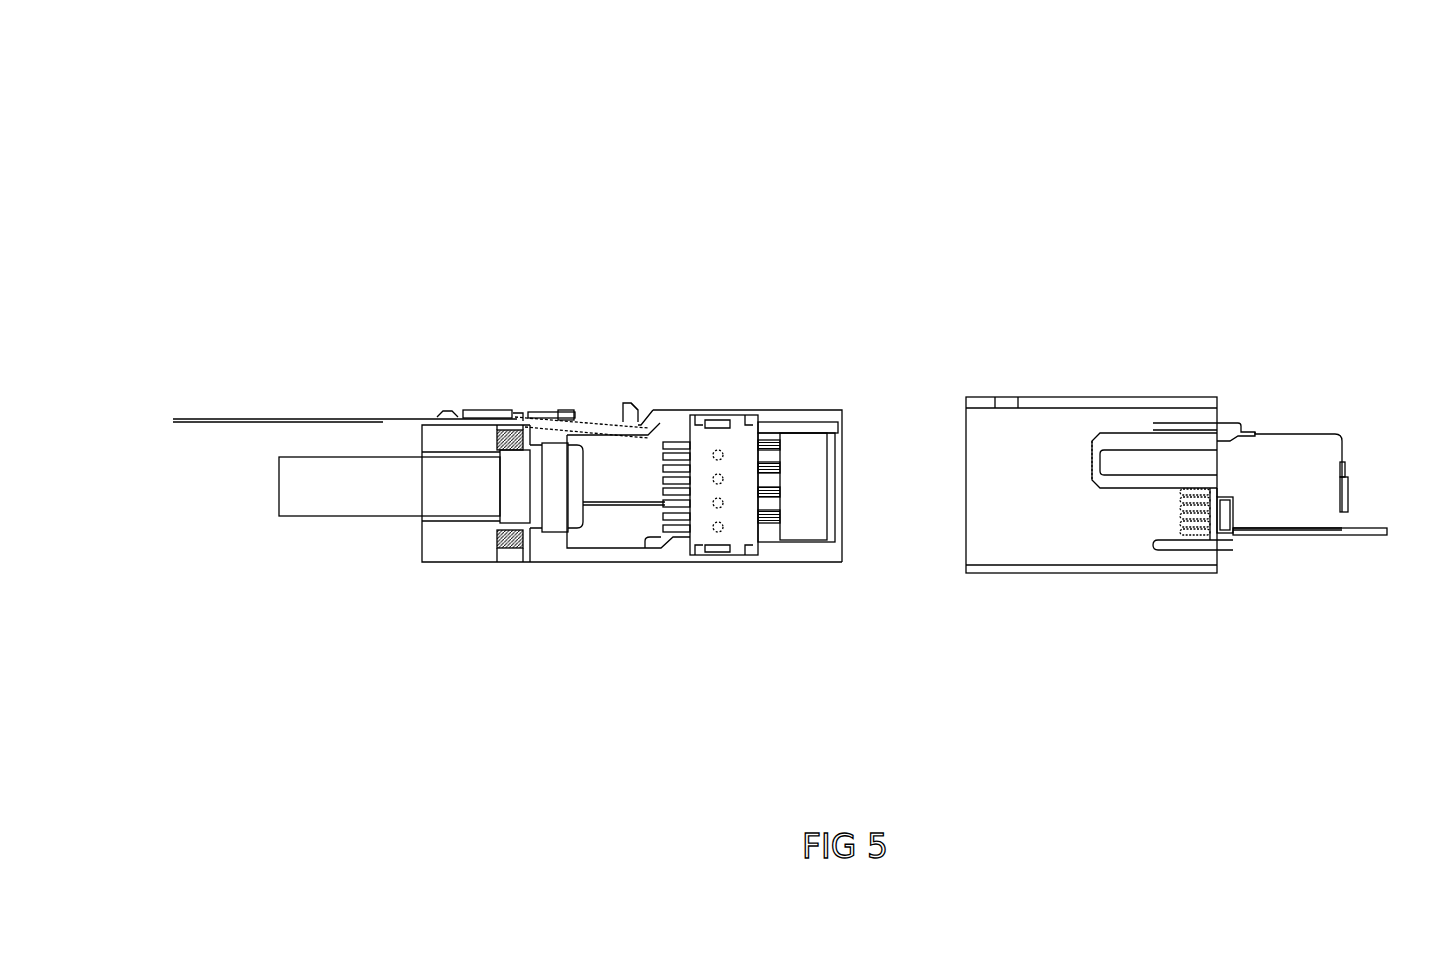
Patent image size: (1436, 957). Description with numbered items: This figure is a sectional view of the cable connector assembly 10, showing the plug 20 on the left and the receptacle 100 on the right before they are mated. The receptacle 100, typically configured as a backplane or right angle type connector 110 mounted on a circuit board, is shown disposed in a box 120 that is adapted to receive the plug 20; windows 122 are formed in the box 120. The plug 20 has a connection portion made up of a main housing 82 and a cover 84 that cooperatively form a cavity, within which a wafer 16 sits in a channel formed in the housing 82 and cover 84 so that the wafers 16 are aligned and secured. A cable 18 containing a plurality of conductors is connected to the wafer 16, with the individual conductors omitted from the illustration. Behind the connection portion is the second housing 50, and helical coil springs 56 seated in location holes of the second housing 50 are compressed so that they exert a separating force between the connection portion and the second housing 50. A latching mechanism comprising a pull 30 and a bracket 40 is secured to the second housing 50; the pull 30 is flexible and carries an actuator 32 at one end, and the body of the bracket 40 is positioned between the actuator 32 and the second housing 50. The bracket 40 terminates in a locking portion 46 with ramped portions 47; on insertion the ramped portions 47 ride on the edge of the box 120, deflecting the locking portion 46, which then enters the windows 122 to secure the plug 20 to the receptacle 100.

The cable connector assembly 10 is at (306, 125).
The wafer 16 is at (762, 536).
The cable 18 is at (318, 515).
The plug 20 is at (424, 402).
The pull 30 is at (293, 418).
The actuator 32 is at (565, 411).
The bracket 40 is at (492, 409).
The locking portion 46 is at (630, 402).
The ramped portions 47 is at (636, 402).
The second housing 50 is at (427, 562).
The helical coil spring 56 is at (513, 429).
The main housing 82 is at (775, 409).
The cover 84 is at (713, 562).
The receptacle 100 is at (1163, 611).
The right angle type connector 110 is at (1279, 418).
The box 120 is at (1070, 397).
The windows 122 is at (1002, 397).